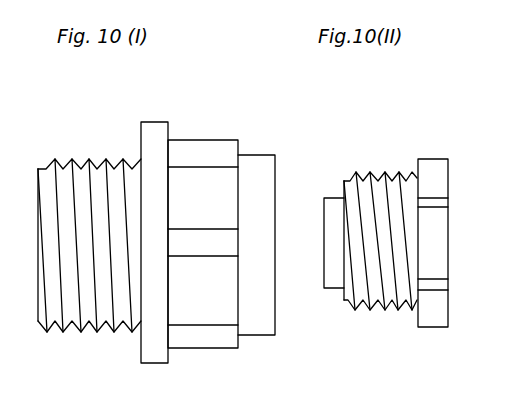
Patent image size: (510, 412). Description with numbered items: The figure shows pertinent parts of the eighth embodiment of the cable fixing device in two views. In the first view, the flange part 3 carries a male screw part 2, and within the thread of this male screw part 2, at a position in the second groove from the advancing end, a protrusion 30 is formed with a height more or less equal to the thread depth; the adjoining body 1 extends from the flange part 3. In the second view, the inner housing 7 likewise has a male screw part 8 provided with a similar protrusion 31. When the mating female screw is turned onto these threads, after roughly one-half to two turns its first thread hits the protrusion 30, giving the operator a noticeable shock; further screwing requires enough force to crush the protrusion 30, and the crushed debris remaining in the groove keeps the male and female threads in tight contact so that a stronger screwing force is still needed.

The body 1 is at (193, 150).
The male screw part 2 is at (89, 241).
The flange part 3 is at (150, 134).
The protrusion 30 is at (64, 158).
The protrusion 31 is at (357, 170).
The inner housing 7 is at (437, 158).
The male screw part 8 is at (370, 245).